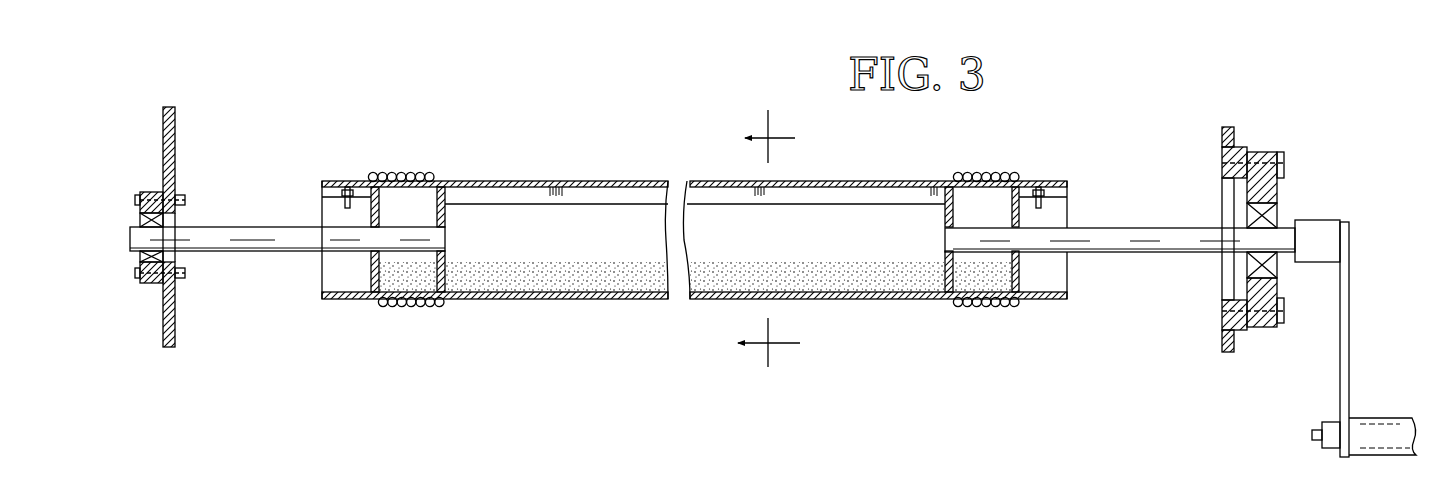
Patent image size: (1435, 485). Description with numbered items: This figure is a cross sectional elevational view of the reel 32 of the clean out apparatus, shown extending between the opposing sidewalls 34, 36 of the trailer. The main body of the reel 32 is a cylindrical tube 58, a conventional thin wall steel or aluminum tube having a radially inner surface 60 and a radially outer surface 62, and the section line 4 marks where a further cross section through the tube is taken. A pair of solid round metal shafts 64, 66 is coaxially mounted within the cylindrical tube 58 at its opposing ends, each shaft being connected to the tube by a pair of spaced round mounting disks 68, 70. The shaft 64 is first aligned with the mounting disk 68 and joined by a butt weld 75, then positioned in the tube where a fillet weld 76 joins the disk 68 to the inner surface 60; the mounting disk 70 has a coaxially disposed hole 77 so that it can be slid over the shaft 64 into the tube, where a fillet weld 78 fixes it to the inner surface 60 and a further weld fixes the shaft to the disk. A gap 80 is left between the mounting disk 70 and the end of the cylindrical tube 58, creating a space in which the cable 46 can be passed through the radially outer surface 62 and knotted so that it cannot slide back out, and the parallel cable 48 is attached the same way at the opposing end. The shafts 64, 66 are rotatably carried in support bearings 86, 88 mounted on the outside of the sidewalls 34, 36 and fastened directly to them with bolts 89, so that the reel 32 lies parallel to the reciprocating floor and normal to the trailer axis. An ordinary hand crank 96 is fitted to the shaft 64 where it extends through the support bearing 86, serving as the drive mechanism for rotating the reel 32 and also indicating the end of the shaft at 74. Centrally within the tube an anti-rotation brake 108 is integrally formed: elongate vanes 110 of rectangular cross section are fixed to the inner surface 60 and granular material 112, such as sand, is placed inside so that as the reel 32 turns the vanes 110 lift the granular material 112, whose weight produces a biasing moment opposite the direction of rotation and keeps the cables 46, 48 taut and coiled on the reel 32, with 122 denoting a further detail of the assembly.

The section line 4- 4 is at (769, 240).
The reel 32 is at (556, 172).
The sidewall 34 is at (1233, 135).
The sidewall 36 is at (163, 137).
The cable 46 is at (1015, 176).
The cable 48 is at (398, 171).
The cylindrical tube 58 is at (545, 300).
The radially inner surface 60 is at (820, 240).
The radially outer surface 62 is at (713, 300).
The shaft 64 is at (1145, 230).
The shaft 66 is at (262, 225).
The mounting disk 68 is at (440, 184).
The mounting disk 70 is at (371, 282).
The rod portion 74 is at (1145, 258).
The butt weld 75 is at (960, 219).
The fillet weld 76 is at (943, 212).
The hole 77 is at (1000, 219).
The fillet weld 78 is at (1025, 282).
The gap 80 is at (1073, 212).
The support bearing 86 is at (1290, 194).
The support bearing 88 is at (148, 300).
The bolts 89 is at (1290, 320).
The hand crank 96 is at (1358, 349).
The anti-rotation brake 108 is at (500, 287).
The vanes 110 is at (610, 265).
The granular material 112 is at (865, 283).
The element 122 is at (930, 483).